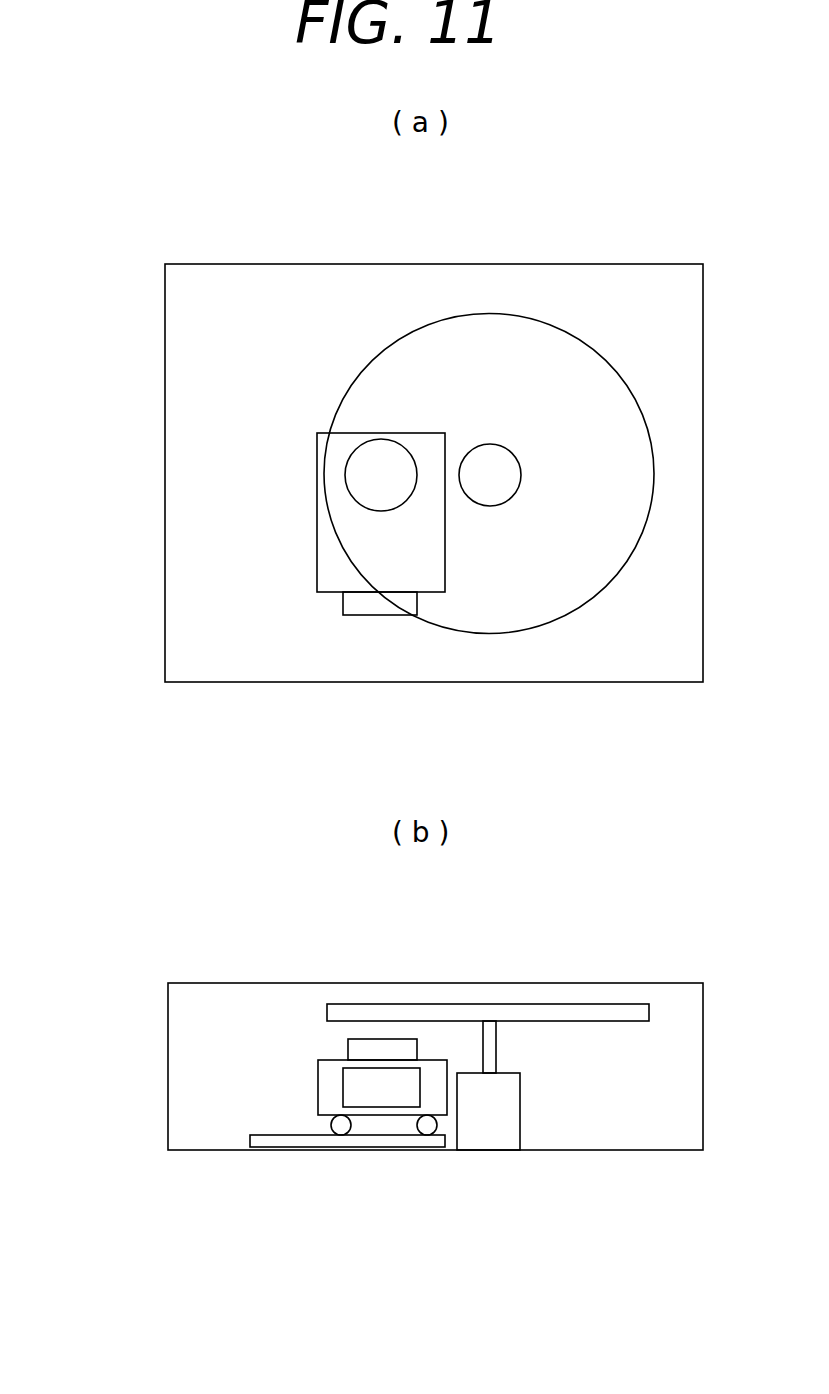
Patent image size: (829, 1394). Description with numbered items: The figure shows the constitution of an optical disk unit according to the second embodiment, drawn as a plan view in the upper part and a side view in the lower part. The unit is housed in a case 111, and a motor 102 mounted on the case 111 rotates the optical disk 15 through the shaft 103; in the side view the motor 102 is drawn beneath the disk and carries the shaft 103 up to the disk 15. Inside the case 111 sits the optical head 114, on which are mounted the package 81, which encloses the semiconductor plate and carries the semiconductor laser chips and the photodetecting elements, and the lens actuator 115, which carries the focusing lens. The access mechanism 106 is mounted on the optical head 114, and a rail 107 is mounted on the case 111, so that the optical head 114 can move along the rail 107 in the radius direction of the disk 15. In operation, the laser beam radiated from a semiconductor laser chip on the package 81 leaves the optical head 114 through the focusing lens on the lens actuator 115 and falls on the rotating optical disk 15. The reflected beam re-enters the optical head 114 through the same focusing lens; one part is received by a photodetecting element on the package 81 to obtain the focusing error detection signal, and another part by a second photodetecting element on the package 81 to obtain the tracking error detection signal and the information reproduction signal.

The optical disk 15 is at (527, 317).
The package 81 is at (345, 615).
The spindle motor 102 is at (506, 505).
The shaft 103 is at (497, 1033).
The access mechanism 106 is at (420, 1143).
The rail 107 is at (302, 1148).
The case 111 is at (187, 263).
The optical head 114 is at (317, 559).
The lens actuator 115 is at (345, 476).